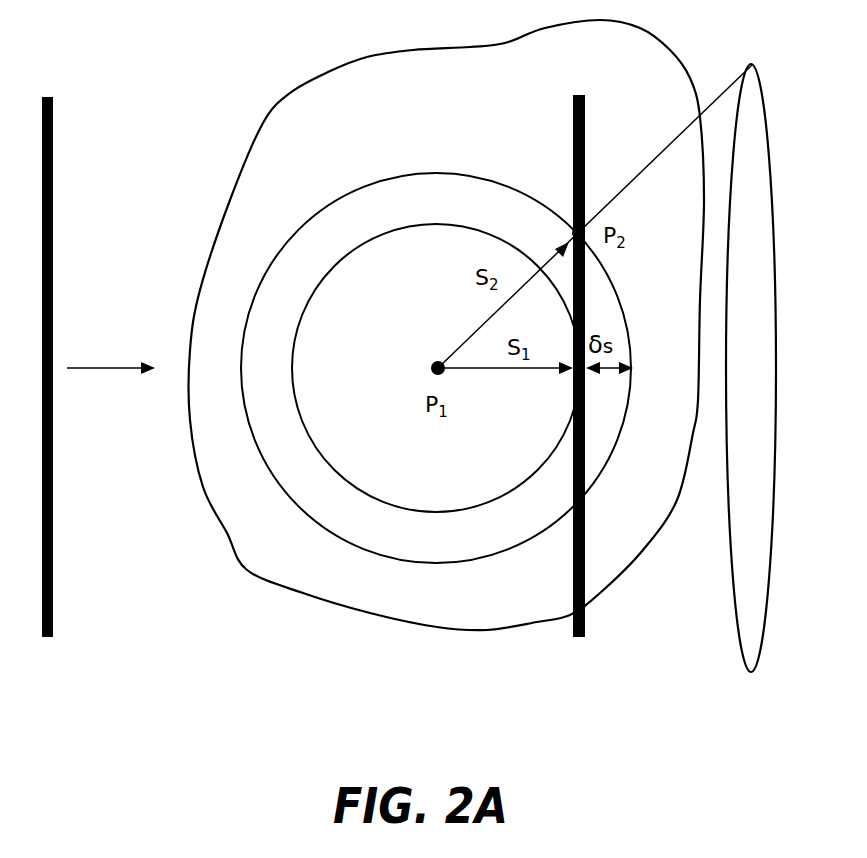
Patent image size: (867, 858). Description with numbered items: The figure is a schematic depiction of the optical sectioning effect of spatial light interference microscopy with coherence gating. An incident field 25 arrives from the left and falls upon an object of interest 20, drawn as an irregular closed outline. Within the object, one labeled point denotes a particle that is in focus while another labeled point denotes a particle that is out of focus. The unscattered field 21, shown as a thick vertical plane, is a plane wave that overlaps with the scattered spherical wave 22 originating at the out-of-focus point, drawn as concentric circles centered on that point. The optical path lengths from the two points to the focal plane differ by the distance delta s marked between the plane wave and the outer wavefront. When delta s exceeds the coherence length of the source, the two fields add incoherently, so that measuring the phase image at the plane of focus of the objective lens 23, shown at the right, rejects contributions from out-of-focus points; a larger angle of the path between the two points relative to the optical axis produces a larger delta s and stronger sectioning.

The object of interest 20 is at (328, 72).
The unscattered field 21 is at (573, 115).
The scattered spherical wave 22 is at (622, 440).
The objective lens 23 is at (738, 640).
The field 25 is at (54, 113).